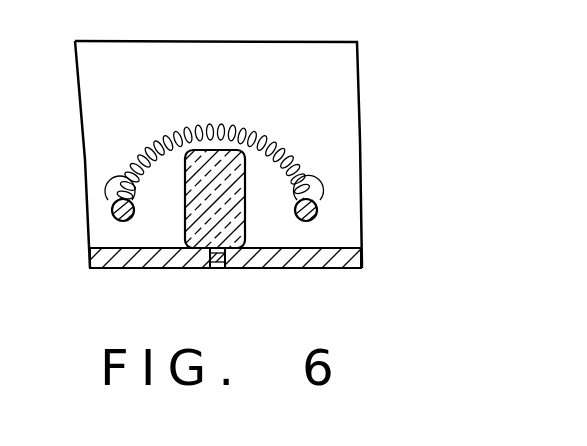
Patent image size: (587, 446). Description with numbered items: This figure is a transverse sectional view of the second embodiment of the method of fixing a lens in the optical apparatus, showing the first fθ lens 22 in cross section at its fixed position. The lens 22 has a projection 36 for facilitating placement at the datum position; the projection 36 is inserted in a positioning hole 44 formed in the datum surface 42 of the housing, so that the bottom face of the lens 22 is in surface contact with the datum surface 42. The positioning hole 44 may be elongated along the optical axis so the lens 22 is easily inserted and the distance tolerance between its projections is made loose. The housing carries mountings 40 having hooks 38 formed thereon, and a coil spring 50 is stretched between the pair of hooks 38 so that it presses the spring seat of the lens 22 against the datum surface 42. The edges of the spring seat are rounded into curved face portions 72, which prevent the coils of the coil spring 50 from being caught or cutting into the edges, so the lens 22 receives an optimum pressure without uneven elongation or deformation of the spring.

The mounting 40 is at (170, 63).
The curved face portion 72 is at (257, 140).
The coil spring 50 is at (277, 147).
The hook 38 is at (105, 210).
The datum surface 42 is at (183, 254).
The positioning hole 44 is at (218, 268).
The projection 36 is at (243, 266).
The first fθ lens 22 is at (240, 232).